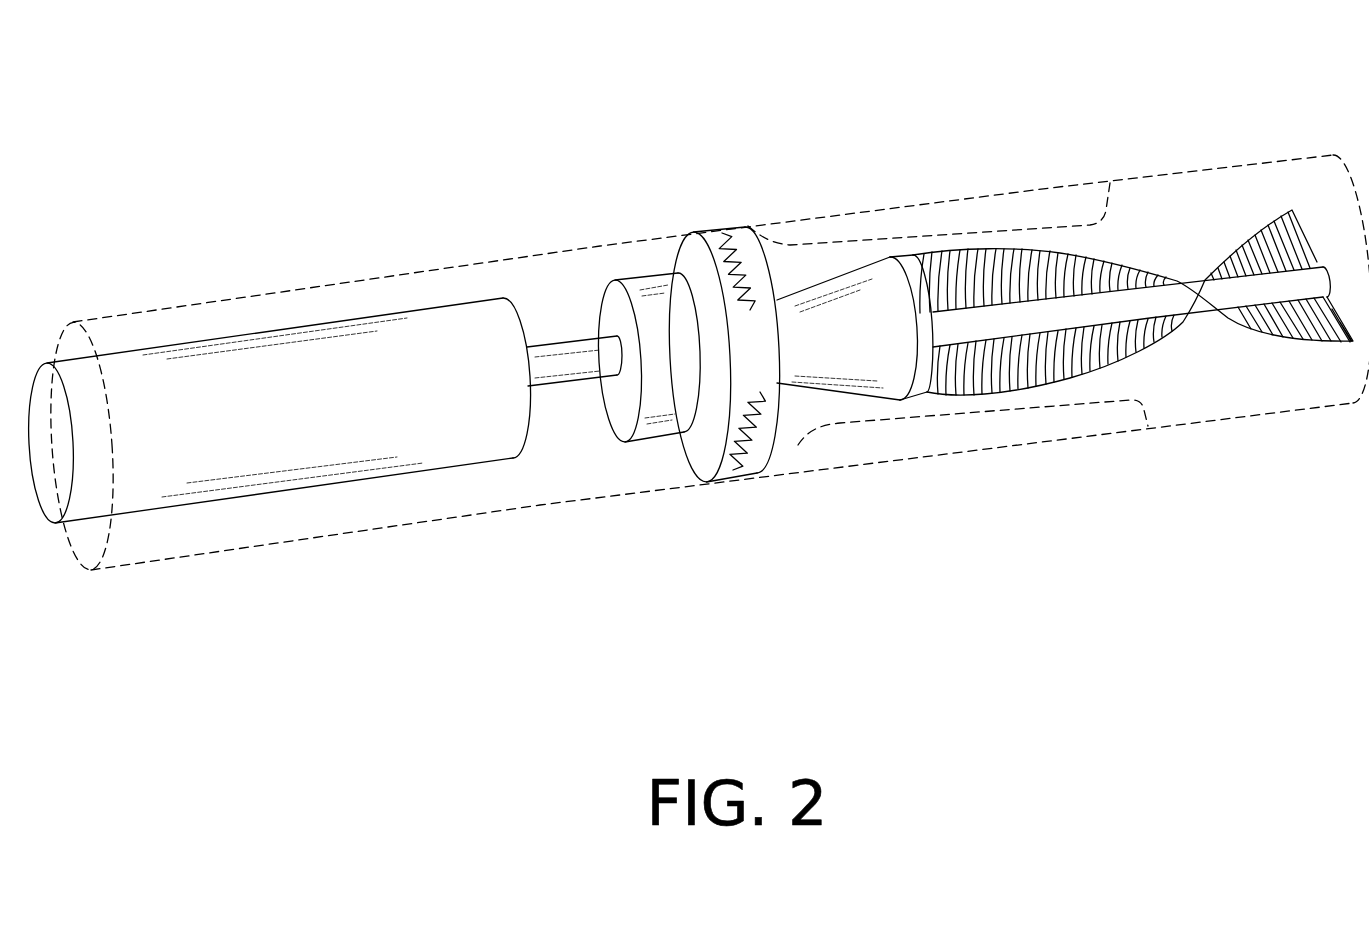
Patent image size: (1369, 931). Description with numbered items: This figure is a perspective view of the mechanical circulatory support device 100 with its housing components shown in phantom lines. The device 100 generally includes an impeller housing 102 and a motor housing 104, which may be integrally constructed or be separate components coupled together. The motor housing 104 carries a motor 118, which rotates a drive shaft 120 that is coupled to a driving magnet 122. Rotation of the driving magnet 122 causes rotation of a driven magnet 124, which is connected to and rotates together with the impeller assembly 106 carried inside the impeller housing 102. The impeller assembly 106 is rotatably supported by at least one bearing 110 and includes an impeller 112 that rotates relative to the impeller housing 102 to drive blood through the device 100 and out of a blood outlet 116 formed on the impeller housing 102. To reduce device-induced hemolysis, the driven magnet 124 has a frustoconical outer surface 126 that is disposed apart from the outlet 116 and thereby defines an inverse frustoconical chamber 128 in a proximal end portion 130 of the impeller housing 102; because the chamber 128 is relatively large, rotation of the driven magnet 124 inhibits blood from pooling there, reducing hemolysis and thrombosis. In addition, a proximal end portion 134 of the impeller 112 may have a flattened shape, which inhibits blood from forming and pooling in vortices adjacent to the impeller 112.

The mechanical circulatory support device 100 is at (306, 222).
The impeller housing 102 is at (1184, 155).
The motor housing 104 is at (202, 300).
The impeller assembly 106 is at (1108, 232).
The bearing 110 is at (710, 230).
The impeller 112 is at (1316, 240).
The blood outlet 116 is at (1025, 230).
The motor 118 is at (428, 308).
The drive shaft 120 is at (567, 343).
The driving magnet 122 is at (643, 278).
The driven magnet 124 is at (800, 288).
The frustoconical outer surface 126 is at (843, 295).
The inverse frustoconical chamber 128 is at (787, 430).
The proximal end portion of the impeller housing 130 is at (767, 475).
The proximal end portion of the impeller 134 is at (903, 257).